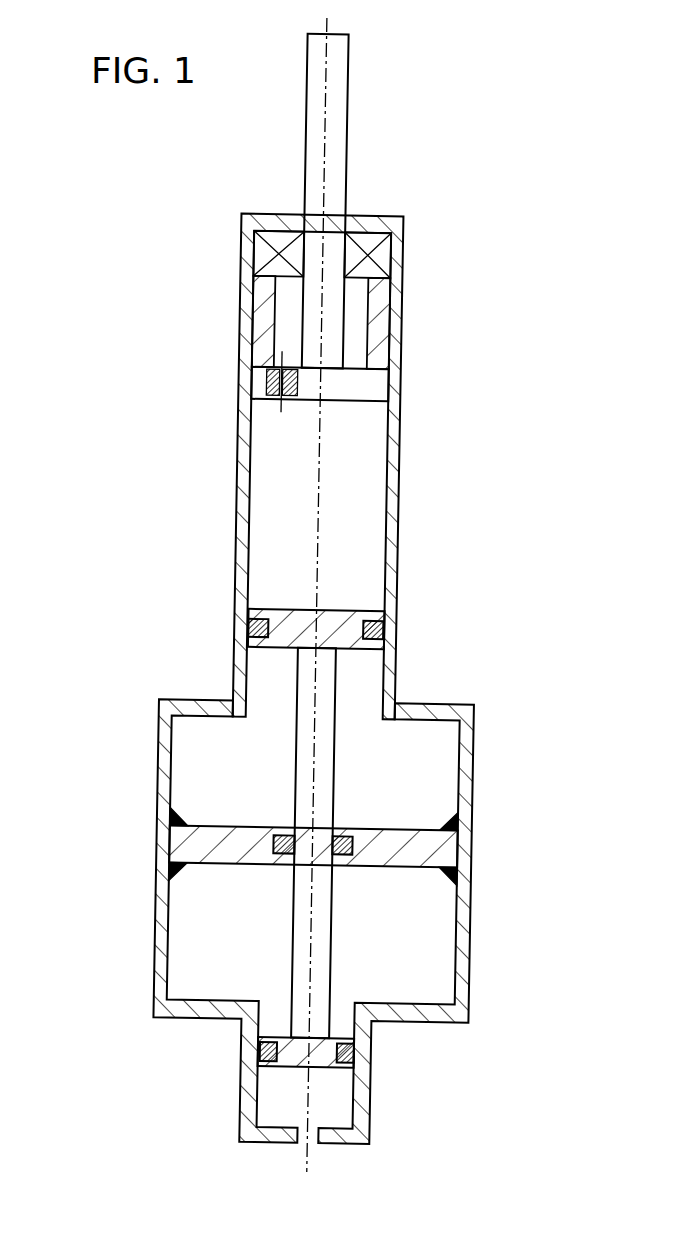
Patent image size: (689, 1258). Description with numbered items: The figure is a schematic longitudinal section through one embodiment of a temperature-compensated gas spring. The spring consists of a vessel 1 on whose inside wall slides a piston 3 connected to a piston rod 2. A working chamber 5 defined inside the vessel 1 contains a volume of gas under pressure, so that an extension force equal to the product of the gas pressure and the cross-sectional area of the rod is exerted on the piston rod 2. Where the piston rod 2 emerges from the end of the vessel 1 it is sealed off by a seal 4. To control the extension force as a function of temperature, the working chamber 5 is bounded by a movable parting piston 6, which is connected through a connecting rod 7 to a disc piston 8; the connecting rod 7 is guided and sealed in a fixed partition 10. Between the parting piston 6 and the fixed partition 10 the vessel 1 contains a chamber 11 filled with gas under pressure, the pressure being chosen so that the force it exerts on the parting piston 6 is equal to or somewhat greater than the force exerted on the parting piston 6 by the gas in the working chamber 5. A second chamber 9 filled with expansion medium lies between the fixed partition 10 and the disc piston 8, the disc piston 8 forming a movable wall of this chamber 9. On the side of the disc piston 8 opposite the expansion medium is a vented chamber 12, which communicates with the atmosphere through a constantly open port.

The vessel 1 is at (235, 428).
The piston rod 2 is at (337, 96).
The piston 3 is at (359, 382).
The seal 4 is at (255, 249).
The working chamber 5 is at (363, 487).
The parting piston 6 is at (294, 630).
The connecting rod 7 is at (303, 717).
The disc piston 8 is at (294, 1056).
The second chamber 9 is at (427, 914).
The fixed partition 10 is at (190, 840).
The chamber 11 is at (433, 764).
The vented chamber 12 is at (350, 1098).